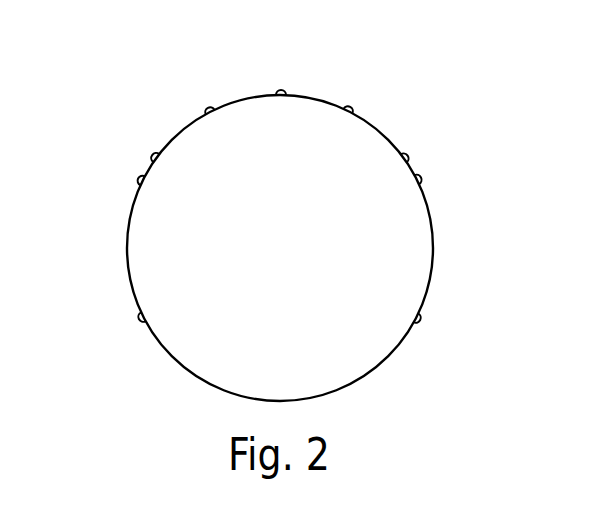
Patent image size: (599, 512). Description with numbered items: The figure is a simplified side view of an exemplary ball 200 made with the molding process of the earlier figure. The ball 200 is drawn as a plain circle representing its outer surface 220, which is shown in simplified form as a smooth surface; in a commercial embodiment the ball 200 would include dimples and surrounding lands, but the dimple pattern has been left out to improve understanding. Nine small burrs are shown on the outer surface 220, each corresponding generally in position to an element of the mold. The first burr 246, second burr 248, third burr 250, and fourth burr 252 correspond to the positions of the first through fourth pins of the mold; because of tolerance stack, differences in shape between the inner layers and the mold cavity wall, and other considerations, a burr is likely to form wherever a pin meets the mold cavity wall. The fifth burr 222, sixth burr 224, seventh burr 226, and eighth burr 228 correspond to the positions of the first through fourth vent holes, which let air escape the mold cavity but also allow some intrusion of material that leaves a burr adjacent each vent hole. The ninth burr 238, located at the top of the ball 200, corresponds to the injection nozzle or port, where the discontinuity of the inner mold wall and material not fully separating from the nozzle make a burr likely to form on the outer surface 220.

The ball 200 is at (413, 88).
The outer surface 220 is at (433, 250).
The fifth burr 222 is at (407, 156).
The sixth burr 224 is at (348, 107).
The seventh burr 226 is at (209, 108).
The eighth burr 228 is at (153, 156).
The ninth burr 238 is at (281, 90).
The first burr 246 is at (419, 319).
The second burr 248 is at (420, 179).
The third burr 250 is at (139, 179).
The fourth burr 252 is at (140, 319).